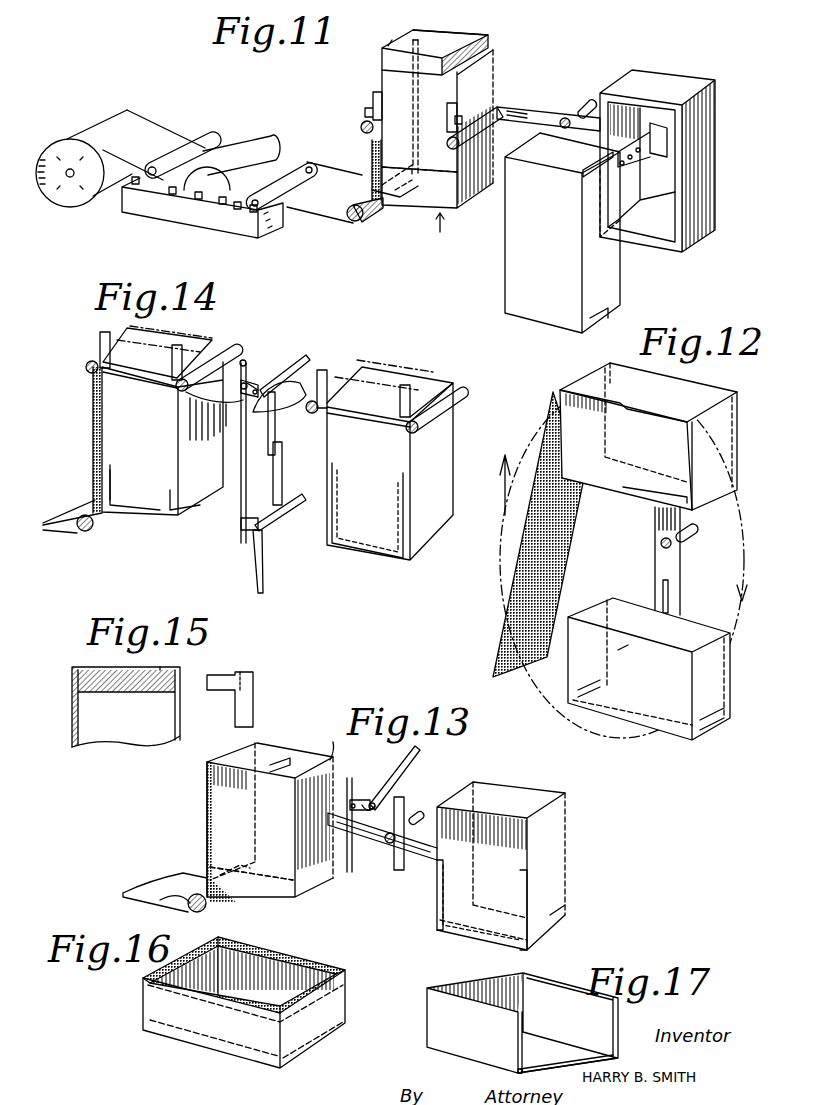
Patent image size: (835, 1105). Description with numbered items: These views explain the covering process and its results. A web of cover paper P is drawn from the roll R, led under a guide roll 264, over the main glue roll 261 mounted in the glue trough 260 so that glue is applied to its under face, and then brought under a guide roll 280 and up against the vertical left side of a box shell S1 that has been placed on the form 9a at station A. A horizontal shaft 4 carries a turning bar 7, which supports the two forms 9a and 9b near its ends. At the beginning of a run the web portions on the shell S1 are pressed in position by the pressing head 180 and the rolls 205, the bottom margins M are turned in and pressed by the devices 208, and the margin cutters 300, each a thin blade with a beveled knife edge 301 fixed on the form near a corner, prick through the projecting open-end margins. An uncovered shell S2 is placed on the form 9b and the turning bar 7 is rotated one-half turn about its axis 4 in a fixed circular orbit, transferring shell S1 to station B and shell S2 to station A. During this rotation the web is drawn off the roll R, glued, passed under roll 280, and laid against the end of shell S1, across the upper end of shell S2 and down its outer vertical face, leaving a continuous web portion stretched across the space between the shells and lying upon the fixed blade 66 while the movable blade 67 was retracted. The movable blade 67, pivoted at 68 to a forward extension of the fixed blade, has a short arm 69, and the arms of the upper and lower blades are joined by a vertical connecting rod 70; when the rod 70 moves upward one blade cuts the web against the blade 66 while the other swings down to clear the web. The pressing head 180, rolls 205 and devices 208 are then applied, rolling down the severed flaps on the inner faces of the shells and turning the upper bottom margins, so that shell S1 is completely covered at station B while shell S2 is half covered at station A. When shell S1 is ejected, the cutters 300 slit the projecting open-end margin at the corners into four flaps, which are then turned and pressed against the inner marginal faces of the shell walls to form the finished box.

In FIG. 11, the roll of cover paper R is at (66, 148).
In FIG. 11, the guide roll 264 is at (199, 140).
In FIG. 11, the main glue roll 261 is at (216, 160).
In FIG. 11, the glue trough 260 is at (153, 205).
In FIG. 11, the cover web P is at (325, 216).
In FIG. 14, the cover web P is at (93, 444).
In FIG. 12, the cover web P is at (508, 620).
In FIG. 13, the cover web P is at (206, 829).
In FIG. 11, the guide roll 280 is at (358, 222).
In FIG. 14, the guide roll 280 is at (81, 532).
In FIG. 13, the guide roll 280 is at (160, 906).
In FIG. 11, the station A is at (429, 117).
In FIG. 14, the station A is at (161, 432).
In FIG. 13, the station A is at (270, 809).
In FIG. 11, the pressing head 180 is at (390, 44).
In FIG. 11, the margin cutter 300 is at (492, 42).
In FIG. 15, the margin cutter 300 is at (178, 668).
In FIG. 11, the bottom cover margin M is at (450, 91).
In FIG. 16, the bottom cover margin M is at (250, 1048).
In FIG. 17, the bottom cover margin M is at (565, 1070).
In FIG. 11, the margin-turning and pressing device 208 is at (372, 96).
In FIG. 11, the pressing roll 205 is at (361, 125).
In FIG. 14, the pressing roll 205 is at (85, 368).
In FIG. 11, the turning bar 7 is at (547, 110).
In FIG. 12, the turning bar 7 is at (682, 562).
In FIG. 13, the turning bar 7 is at (375, 846).
In FIG. 11, the horizontal shaft 4 is at (586, 100).
In FIG. 12, the horizontal shaft 4 is at (697, 529).
In FIG. 13, the horizontal shaft 4 is at (418, 812).
In FIG. 11, the station B is at (669, 161).
In FIG. 14, the station B is at (385, 466).
In FIG. 13, the station B is at (501, 857).
In FIG. 11, the form 9b is at (716, 195).
In FIG. 14, the form 9b is at (174, 515).
In FIG. 11, the box shell S1 is at (418, 200).
In FIG. 14, the box shell S1 is at (393, 558).
In FIG. 12, the box shell S1 is at (618, 488).
In FIG. 13, the box shell S1 is at (455, 920).
In FIG. 11, the form 9a is at (443, 232).
In FIG. 11, the box shell S2 is at (541, 318).
In FIG. 14, the box shell S2 is at (130, 512).
In FIG. 12, the box shell S2 is at (655, 720).
In FIG. 13, the box shell S2 is at (270, 890).
In FIG. 14, the connecting rod 70 is at (240, 500).
In FIG. 13, the connecting rod 70 is at (349, 875).
In FIG. 14, the short arm 69 is at (250, 383).
In FIG. 13, the short arm 69 is at (355, 798).
In FIG. 14, the pivot 68 is at (262, 390).
In FIG. 13, the pivot 68 is at (373, 800).
In FIG. 14, the movable blade 67 is at (308, 357).
In FIG. 13, the movable blade 67 is at (416, 752).
In FIG. 14, the fixed cutter blade 66 is at (278, 520).
In FIG. 13, the fixed cutter blade 66 is at (410, 800).
In FIG. 15, the beveled knife edge 301 is at (160, 667).